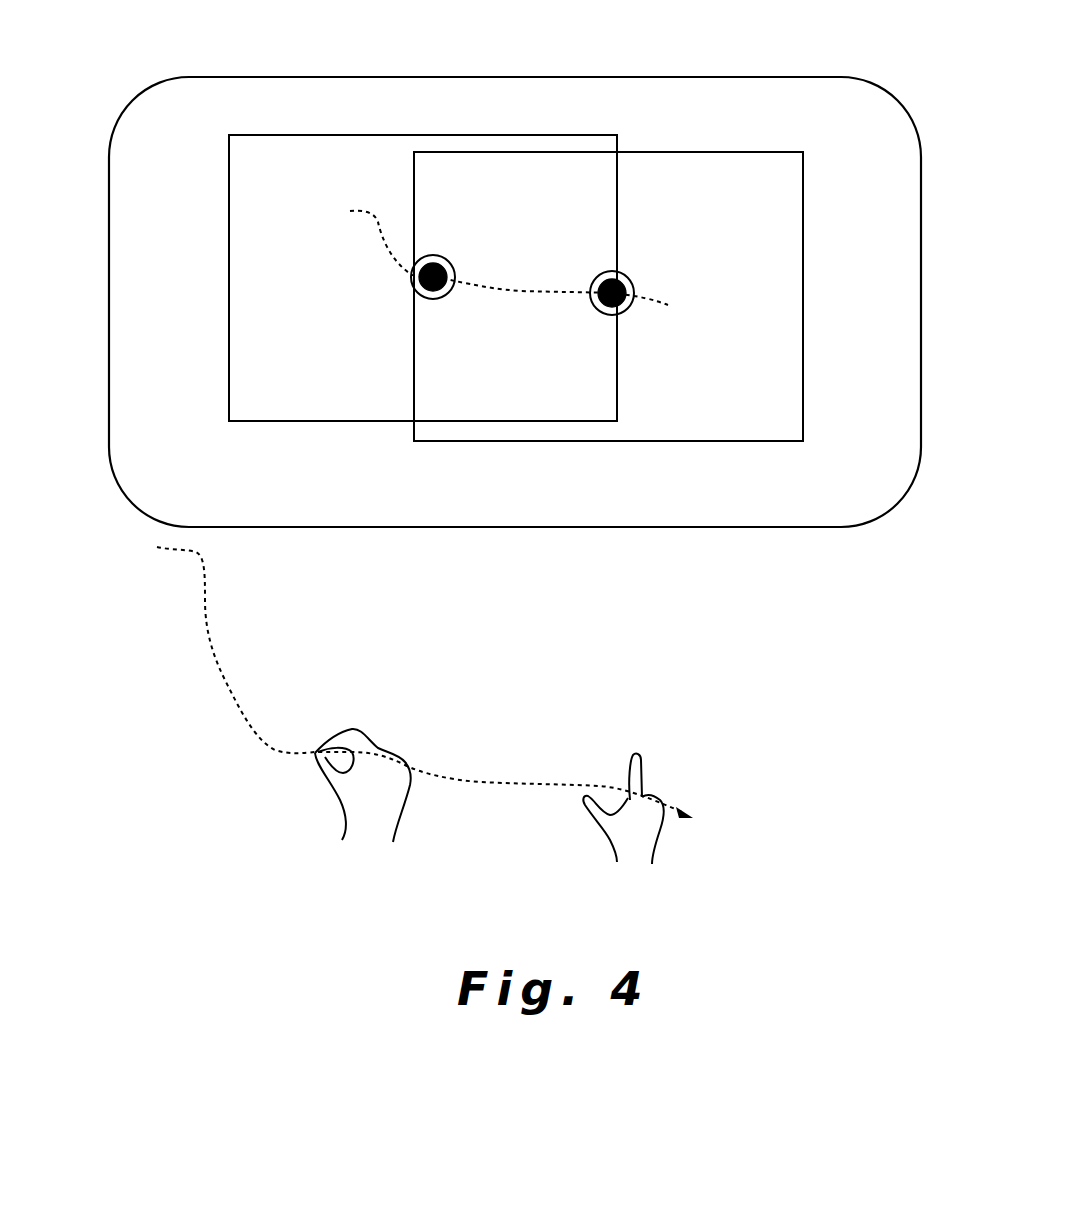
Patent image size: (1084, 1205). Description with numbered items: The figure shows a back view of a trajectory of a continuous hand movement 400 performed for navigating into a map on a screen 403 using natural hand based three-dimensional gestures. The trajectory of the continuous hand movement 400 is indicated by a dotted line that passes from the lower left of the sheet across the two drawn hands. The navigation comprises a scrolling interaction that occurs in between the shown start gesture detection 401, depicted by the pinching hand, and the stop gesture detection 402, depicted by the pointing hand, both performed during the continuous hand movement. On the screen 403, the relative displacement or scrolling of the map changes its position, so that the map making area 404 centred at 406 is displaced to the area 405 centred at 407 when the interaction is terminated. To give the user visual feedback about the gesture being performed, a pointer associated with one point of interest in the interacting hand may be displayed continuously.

The continuous hand movement 400 is at (206, 681).
The start gesture detection 401 is at (305, 758).
The stop gesture detection 402 is at (585, 795).
The screen 403 is at (766, 532).
The map making area 404 is at (328, 426).
The area 405 is at (572, 446).
The centre of map making area 406 is at (452, 250).
The centre of displaced area 407 is at (632, 265).